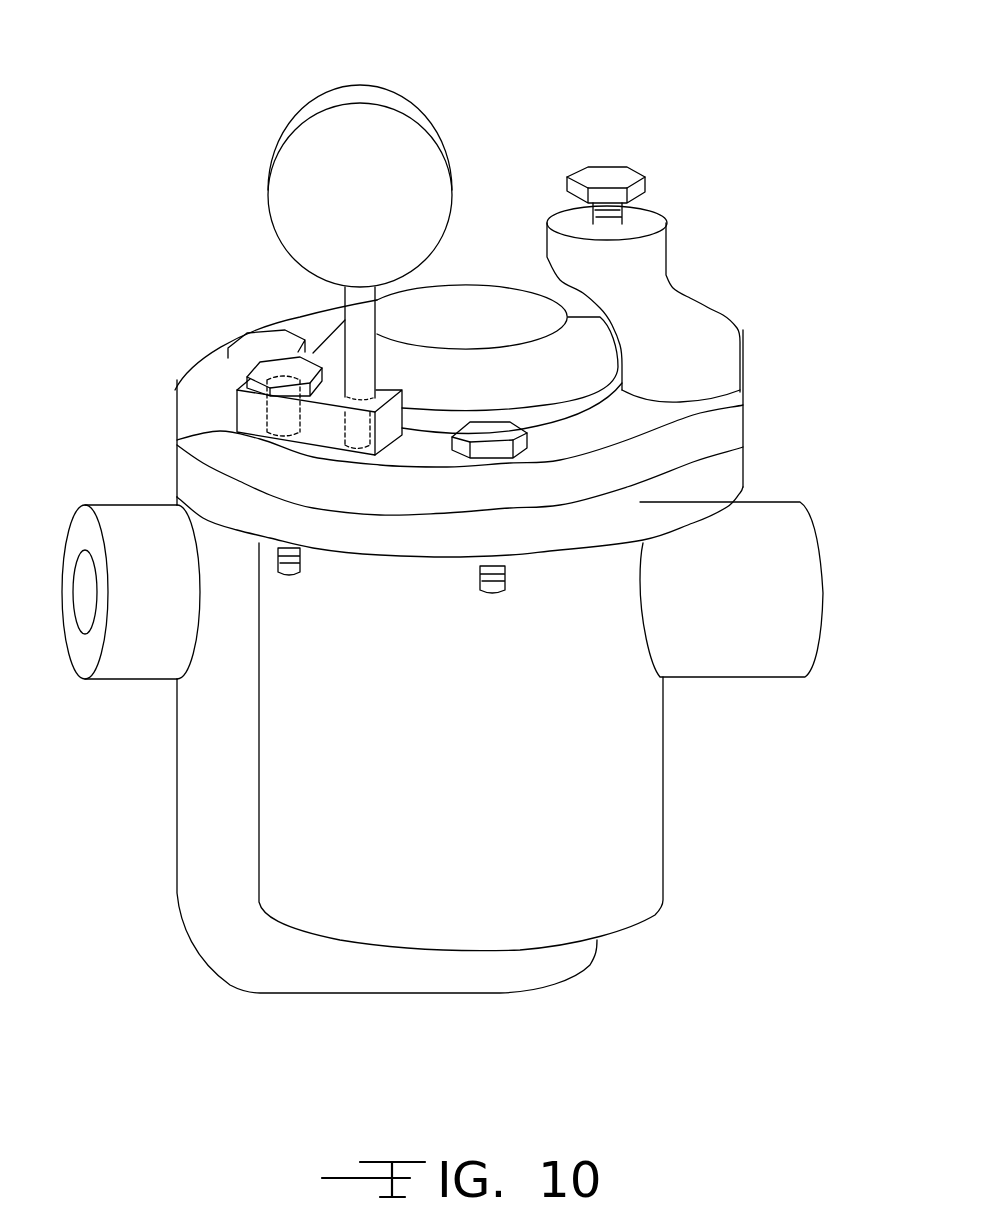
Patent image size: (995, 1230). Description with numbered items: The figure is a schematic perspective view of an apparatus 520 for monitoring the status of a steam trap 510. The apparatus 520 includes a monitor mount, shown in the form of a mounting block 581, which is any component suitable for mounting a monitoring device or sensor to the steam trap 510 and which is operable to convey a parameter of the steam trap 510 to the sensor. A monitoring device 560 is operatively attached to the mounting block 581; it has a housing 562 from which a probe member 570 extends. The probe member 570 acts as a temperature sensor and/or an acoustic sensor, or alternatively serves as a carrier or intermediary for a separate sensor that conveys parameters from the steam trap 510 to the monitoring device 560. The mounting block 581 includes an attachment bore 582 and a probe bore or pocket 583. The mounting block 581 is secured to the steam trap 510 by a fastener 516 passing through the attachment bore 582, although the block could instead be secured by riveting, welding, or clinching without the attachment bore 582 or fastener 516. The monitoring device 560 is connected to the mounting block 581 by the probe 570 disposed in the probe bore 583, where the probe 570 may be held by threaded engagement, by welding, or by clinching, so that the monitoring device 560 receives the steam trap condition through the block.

The steam trap 510 is at (707, 737).
The fastener 516 is at (276, 362).
The apparatus for monitoring the status of a steam trap 520 is at (655, 93).
The monitoring device 560 is at (327, 76).
The housing 562 is at (452, 236).
The probe member 570 is at (380, 304).
The mounting block 581 is at (220, 395).
The attachment bore 582 is at (267, 410).
The probe bore 583 is at (375, 418).